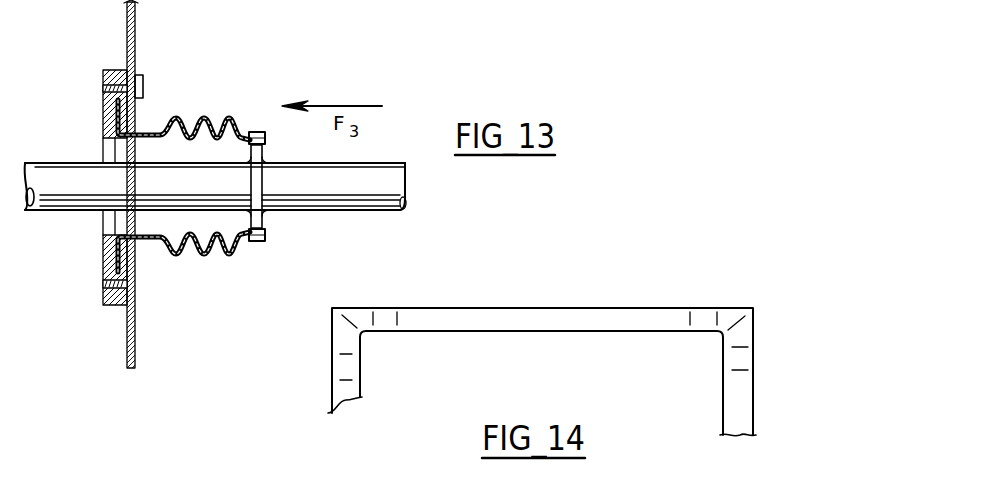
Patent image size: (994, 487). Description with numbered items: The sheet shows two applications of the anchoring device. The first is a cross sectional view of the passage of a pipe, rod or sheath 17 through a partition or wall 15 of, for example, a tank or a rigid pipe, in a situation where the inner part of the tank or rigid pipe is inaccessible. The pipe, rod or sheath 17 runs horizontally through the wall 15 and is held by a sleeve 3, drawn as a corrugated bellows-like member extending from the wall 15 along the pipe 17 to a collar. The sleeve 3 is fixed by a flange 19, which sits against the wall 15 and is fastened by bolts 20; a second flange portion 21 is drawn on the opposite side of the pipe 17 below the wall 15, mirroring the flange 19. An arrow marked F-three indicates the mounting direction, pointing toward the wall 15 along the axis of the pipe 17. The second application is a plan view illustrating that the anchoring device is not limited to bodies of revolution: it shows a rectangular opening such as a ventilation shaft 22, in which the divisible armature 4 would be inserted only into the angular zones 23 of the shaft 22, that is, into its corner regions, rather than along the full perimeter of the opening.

In FIG. 13, the sleeve 3 is at (175, 116).
In FIG. 14, the divisible armature 4 is at (735, 325).
In FIG. 13, the partition or wall 15 is at (135, 337).
In FIG. 13, the pipe, rod or sheath 17 is at (327, 192).
In FIG. 13, the flange 19 is at (103, 108).
In FIG. 13, the bolts 20 is at (139, 78).
In FIG. 13, the lower bearing block 21 is at (86, 261).
In FIG. 14, the ventilation shaft 22 is at (753, 403).
In FIG. 14, the angular zones 23 is at (332, 310).